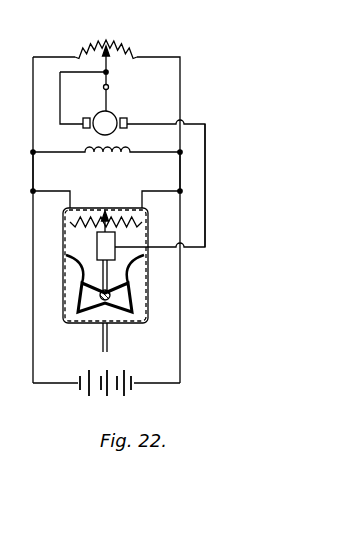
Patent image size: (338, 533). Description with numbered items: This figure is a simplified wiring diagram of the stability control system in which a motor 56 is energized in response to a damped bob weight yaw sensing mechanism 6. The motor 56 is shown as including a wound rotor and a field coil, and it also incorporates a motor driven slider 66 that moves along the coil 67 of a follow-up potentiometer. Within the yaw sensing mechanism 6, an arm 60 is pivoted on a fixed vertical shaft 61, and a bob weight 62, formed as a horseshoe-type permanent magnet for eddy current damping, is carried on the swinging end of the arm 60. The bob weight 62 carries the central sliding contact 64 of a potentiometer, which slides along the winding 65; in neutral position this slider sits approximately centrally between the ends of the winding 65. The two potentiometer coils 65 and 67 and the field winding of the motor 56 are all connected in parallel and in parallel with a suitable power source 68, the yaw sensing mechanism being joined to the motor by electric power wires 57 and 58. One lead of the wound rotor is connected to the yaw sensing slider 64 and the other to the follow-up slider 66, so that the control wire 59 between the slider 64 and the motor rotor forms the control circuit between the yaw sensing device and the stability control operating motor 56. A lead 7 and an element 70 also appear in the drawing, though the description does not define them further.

The damped bob weight yaw sensing mechanism 6 is at (65, 325).
The lead 7 is at (110, 348).
The motor 56 is at (84, 151).
The electric power wire 57 is at (32, 184).
The electric power wire 58 is at (180, 172).
The control wire 59 is at (205, 198).
The arm 60 is at (63, 112).
The fixed vertical shaft 61 is at (112, 296).
The bob weight 62 is at (84, 266).
The central sliding contact 64 is at (100, 250).
The potentiometer winding 65 is at (100, 222).
The motor driven slider 66 is at (108, 66).
The potentiometer coil 67 is at (120, 47).
The power source 68 is at (88, 388).
The bimetal element 70 is at (88, 298).